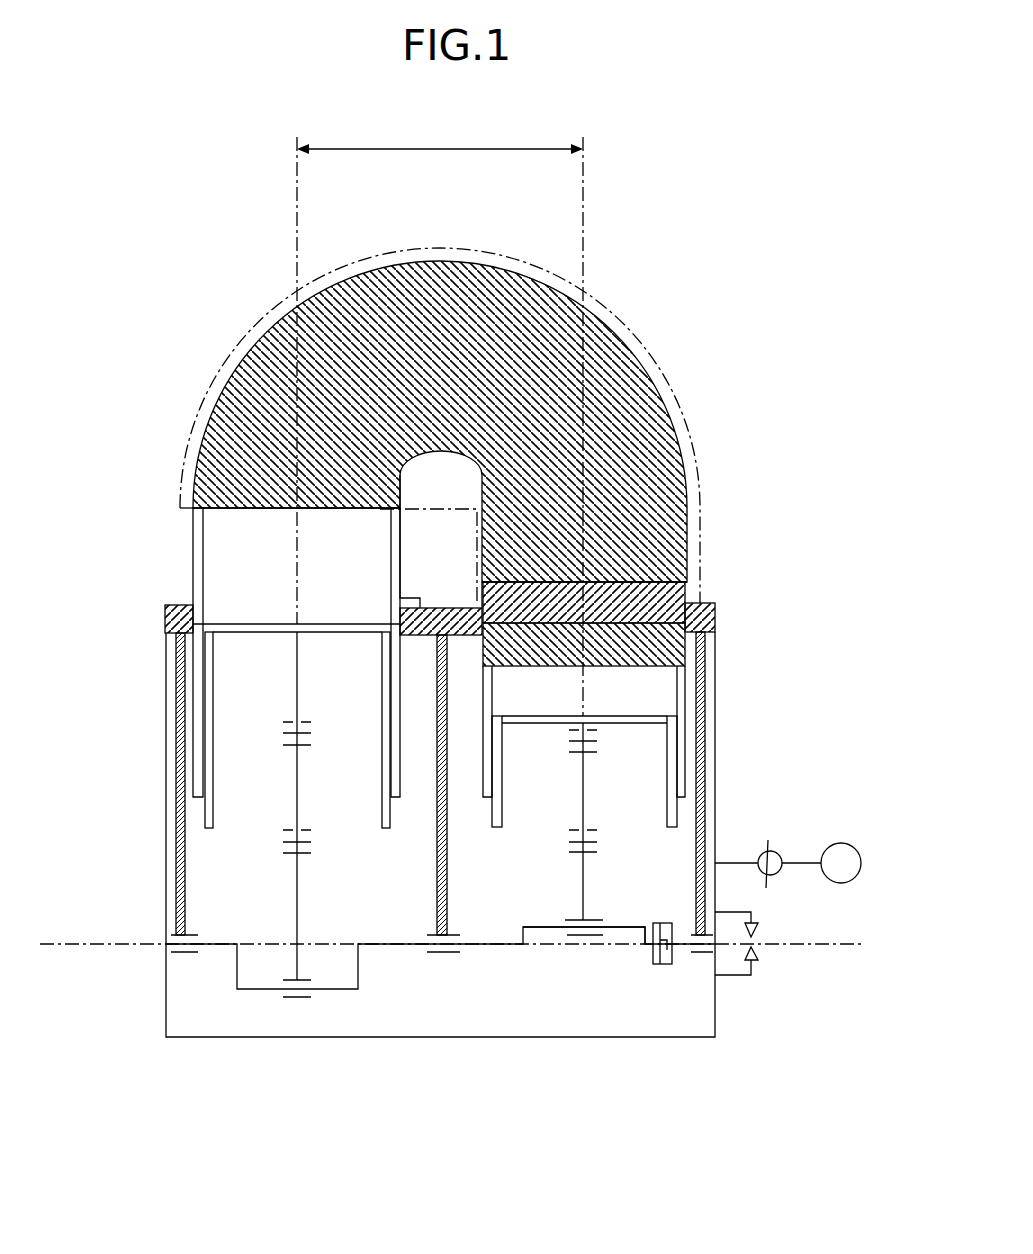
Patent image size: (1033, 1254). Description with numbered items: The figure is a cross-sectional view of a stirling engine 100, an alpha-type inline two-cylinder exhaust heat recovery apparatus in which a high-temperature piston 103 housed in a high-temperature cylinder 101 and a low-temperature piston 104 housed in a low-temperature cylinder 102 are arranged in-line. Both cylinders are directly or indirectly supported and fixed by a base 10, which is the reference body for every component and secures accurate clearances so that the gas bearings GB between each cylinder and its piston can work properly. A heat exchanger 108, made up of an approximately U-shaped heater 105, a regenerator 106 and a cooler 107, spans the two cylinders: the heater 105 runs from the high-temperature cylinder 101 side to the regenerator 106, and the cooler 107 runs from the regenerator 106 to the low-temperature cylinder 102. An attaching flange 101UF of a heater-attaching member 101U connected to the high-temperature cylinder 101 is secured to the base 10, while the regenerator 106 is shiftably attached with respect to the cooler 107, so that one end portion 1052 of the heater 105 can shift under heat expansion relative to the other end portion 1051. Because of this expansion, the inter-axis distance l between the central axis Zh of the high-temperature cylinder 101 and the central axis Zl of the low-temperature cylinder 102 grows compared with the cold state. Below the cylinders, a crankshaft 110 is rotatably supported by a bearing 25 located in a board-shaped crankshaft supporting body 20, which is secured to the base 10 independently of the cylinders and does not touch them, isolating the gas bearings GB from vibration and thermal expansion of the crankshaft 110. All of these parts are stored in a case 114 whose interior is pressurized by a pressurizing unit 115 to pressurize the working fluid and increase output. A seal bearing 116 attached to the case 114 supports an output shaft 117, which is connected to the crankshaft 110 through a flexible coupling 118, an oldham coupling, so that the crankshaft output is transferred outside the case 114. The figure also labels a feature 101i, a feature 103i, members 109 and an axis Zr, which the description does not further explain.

The stirling engine 100 is at (140, 226).
The heater 105 is at (487, 268).
The other end portion of the heater 1051 is at (226, 514).
The one end portion of the heater 1052 is at (517, 588).
The inner surface of upper tube 101i is at (284, 494).
The heat exchanger 108 is at (613, 312).
The heater-attaching member 101U is at (194, 556).
The attaching flange 101UF is at (173, 598).
The high-temperature cylinder 101 is at (200, 652).
The high-temperature piston 103 is at (210, 699).
The low-temperature cylinder 102 is at (680, 778).
The low-temperature piston 104 is at (672, 755).
The regenerator 106 is at (687, 594).
The inner surface 103i is at (622, 575).
The cooler 107 is at (668, 652).
The base 10 is at (716, 618).
The crankshaft supporting body 20 is at (177, 890).
The bearing 25 is at (189, 935).
The shaft 109 is at (298, 892).
The gas bearing GB is at (197, 726).
The crankshaft 110 is at (490, 946).
The case 114 is at (378, 1040).
The pressurizing unit 115 is at (845, 843).
The seal bearing 116 is at (762, 952).
The output shaft 117 is at (765, 942).
The flexible coupling 118 is at (663, 965).
The central axis of the high-temperature cylinder Zh is at (294, 367).
The central axis of the low-temperature cylinder Zl is at (581, 413).
The axis Zr is at (467, 944).
The inter-axis distance l is at (440, 138).